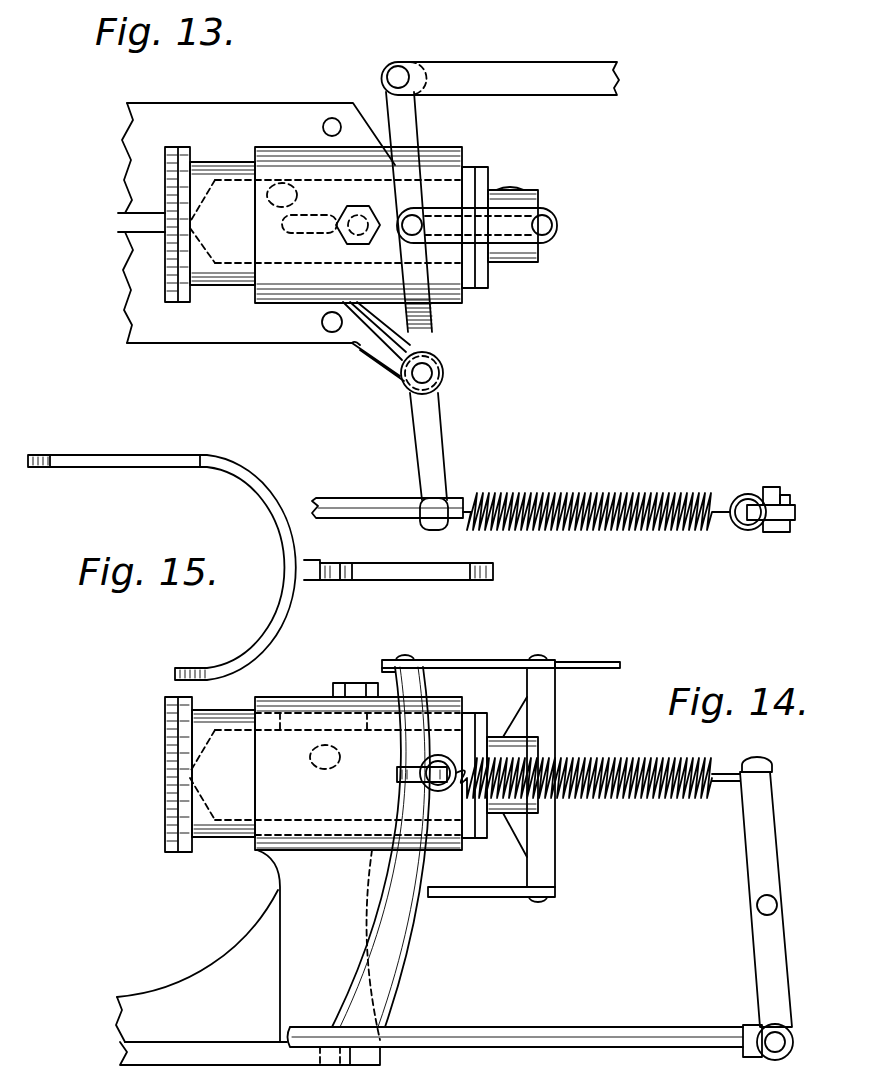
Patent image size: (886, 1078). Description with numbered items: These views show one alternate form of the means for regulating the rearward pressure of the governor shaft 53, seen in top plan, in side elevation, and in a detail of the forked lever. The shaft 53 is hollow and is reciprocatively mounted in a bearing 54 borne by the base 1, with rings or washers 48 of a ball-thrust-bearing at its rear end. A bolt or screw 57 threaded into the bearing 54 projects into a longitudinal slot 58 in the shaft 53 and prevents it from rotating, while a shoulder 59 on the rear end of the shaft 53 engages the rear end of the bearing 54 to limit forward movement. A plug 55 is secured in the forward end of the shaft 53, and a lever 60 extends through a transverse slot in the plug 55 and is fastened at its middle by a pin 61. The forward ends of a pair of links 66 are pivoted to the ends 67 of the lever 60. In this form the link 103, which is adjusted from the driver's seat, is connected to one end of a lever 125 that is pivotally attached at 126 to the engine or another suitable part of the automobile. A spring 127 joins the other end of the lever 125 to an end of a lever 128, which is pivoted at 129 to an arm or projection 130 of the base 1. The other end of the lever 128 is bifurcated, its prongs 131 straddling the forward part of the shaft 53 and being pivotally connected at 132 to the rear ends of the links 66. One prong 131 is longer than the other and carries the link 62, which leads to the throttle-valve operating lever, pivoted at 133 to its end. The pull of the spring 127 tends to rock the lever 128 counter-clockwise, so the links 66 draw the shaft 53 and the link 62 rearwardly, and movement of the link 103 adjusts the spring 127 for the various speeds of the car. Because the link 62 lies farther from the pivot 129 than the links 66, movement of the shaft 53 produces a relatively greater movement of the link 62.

In FIG. 13, the base 1 is at (138, 148).
In FIG. 14, the base 1 is at (148, 1048).
In FIG. 13, the rings or washers 48 is at (175, 255).
In FIG. 14, the rings or washers 48 is at (172, 787).
In FIG. 13, the shaft 53 is at (222, 223).
In FIG. 14, the shaft 53 is at (222, 773).
In FIG. 13, the bearing 54 is at (351, 225).
In FIG. 14, the bearing 54 is at (351, 773).
In FIG. 13, the plug 55 is at (530, 200).
In FIG. 14, the plug 55 is at (535, 745).
In FIG. 13, the bolt or screw 57 is at (357, 220).
In FIG. 14, the bolt or screw 57 is at (348, 688).
In FIG. 13, the longitudinal slot 58 is at (312, 232).
In FIG. 14, the longitudinal slot 58 is at (282, 724).
In FIG. 13, the shoulder 59 is at (195, 175).
In FIG. 14, the shoulder 59 is at (187, 828).
In FIG. 13, the lever 60 is at (490, 228).
In FIG. 14, the lever 60 is at (529, 777).
In FIG. 13, the pin 61 is at (512, 188).
In FIG. 13, the link 62 is at (501, 78).
In FIG. 14, the link 62 is at (595, 660).
In FIG. 13, the links 66 is at (477, 225).
In FIG. 14, the links 66 is at (447, 660).
In FIG. 13, the ends of the lever 67 is at (556, 232).
In FIG. 14, the ends of the lever 67 is at (538, 655).
In FIG. 13, the link 103 is at (355, 500).
In FIG. 14, the link 103 is at (520, 1033).
In FIG. 13, the lever 125 is at (760, 530).
In FIG. 14, the lever 125 is at (770, 825).
In FIG. 13, the pivot 126 is at (770, 487).
In FIG. 14, the pivot 126 is at (758, 905).
In FIG. 13, the spring 127 is at (573, 497).
In FIG. 14, the spring 127 is at (573, 792).
In FIG. 13, the lever 128 is at (440, 470).
In FIG. 15, the lever 128 is at (397, 572).
In FIG. 14, the lever 128 is at (422, 775).
In FIG. 13, the pivot 129 is at (428, 372).
In FIG. 14, the pivot 129 is at (425, 765).
In FIG. 13, the arm or projection 130 is at (400, 355).
In FIG. 14, the arm or projection 130 is at (382, 952).
In FIG. 13, the prongs 131 is at (412, 127).
In FIG. 15, the prongs 131 is at (135, 457).
In FIG. 14, the prongs 131 is at (400, 683).
In FIG. 13, the pivotal connection 132 is at (408, 230).
In FIG. 14, the pivotal connection 132 is at (405, 655).
In FIG. 13, the pivot 133 is at (395, 75).